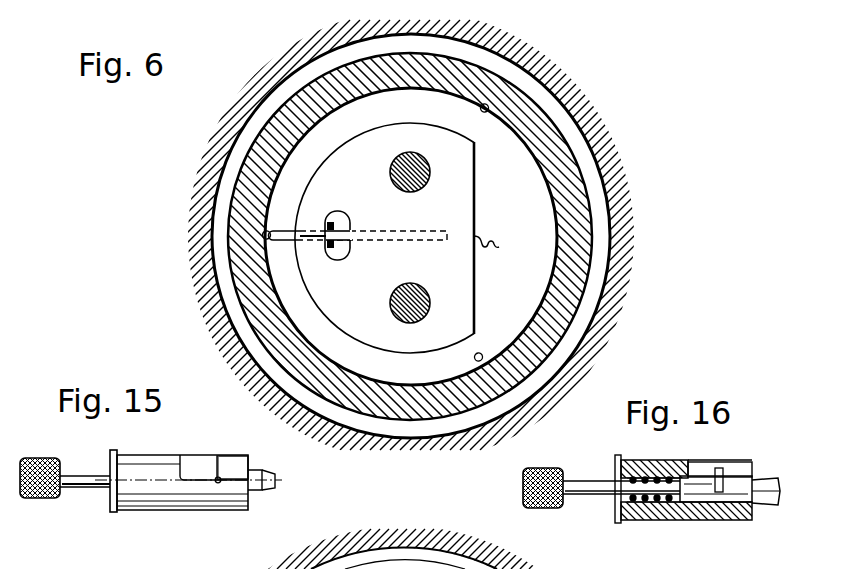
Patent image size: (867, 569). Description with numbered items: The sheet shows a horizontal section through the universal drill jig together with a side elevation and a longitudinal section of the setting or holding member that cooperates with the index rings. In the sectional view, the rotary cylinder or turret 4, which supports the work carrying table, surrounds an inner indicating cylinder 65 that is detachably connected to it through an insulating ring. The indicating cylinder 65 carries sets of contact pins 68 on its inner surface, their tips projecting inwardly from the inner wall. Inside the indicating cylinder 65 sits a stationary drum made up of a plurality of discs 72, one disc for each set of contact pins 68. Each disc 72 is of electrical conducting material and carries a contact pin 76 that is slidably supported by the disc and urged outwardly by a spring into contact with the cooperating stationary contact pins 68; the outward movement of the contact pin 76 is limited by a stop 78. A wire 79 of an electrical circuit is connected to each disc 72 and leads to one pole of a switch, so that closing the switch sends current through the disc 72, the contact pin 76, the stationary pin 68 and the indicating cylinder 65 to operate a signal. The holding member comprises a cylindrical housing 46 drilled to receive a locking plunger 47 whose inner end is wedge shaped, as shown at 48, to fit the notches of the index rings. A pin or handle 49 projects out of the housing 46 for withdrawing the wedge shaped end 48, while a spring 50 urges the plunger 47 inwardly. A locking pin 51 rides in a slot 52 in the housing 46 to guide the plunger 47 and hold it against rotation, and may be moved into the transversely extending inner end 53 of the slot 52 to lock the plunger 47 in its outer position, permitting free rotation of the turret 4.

In FIG. 6, the cylinder 4 is at (612, 177).
In FIG. 6, the indicating cylinder 65 is at (578, 237).
In FIG. 6, the disc 72 is at (463, 283).
In FIG. 6, the contact pin 76 is at (284, 241).
In FIG. 6, the stop 78 is at (335, 262).
In FIG. 6, the wire 79 is at (497, 238).
In FIG. 6, the contact pin 68 is at (485, 112).
In FIG. 15, the cylindrical housing 46 is at (148, 498).
In FIG. 16, the cylindrical housing 46 is at (681, 521).
In FIG. 15, the locking plunger 47 is at (256, 492).
In FIG. 16, the locking plunger 47 is at (729, 493).
In FIG. 15, the wedge shaped end 48 is at (270, 490).
In FIG. 16, the wedge shaped end 48 is at (772, 504).
In FIG. 15, the pin or handle 49 is at (72, 488).
In FIG. 16, the pin or handle 49 is at (582, 496).
In FIG. 16, the spring 50 is at (645, 504).
In FIG. 15, the locking pin 51 is at (218, 476).
In FIG. 16, the locking pin 51 is at (719, 468).
In FIG. 15, the slot 52 is at (238, 470).
In FIG. 16, the slot 52 is at (740, 465).
In FIG. 15, the transversely extending inner end 53 is at (185, 470).